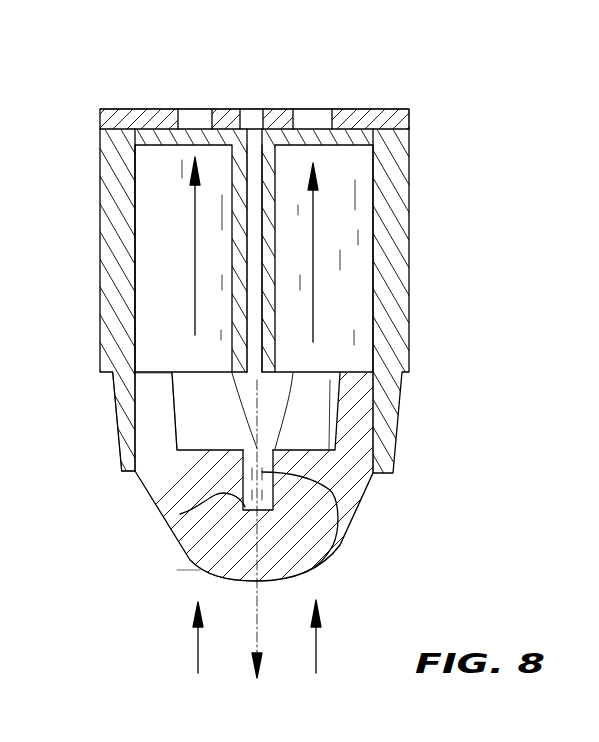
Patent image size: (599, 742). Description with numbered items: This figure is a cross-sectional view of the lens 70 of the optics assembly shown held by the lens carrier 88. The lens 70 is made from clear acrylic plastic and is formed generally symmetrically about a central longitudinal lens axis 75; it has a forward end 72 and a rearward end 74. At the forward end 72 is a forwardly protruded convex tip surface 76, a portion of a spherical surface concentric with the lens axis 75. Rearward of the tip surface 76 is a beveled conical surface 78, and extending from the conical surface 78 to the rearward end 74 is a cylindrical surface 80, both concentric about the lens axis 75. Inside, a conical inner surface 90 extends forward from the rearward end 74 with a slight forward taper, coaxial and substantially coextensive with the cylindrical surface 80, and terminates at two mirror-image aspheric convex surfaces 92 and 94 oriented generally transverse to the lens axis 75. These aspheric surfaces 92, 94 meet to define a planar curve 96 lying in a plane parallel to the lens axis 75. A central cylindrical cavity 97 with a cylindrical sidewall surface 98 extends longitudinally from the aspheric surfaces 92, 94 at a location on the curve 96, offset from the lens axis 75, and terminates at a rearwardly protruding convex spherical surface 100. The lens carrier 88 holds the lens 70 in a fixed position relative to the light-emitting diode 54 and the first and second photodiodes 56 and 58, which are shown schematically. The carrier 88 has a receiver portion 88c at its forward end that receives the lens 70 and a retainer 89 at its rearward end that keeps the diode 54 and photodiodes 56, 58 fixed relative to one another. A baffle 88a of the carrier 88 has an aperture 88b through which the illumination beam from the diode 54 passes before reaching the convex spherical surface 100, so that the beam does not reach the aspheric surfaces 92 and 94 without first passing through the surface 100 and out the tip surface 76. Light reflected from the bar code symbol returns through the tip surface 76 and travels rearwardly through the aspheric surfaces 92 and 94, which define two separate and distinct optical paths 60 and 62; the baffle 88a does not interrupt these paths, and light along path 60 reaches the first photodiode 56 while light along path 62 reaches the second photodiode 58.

The light-emitting diode 54 is at (252, 109).
The first photodiode 56 is at (195, 109).
The second photodiode 58 is at (315, 109).
The first optical path 60 is at (195, 248).
The second optical path 62 is at (387, 305).
The lens 70 is at (147, 540).
The forward end 72 is at (285, 578).
The rearward end 74 is at (303, 363).
The lens axis 75 is at (257, 605).
The tip surface 76 is at (200, 570).
The conical surface 78 is at (363, 500).
The cylindrical surface 80 is at (395, 425).
The lens carrier 88 is at (392, 198).
The baffle 88a is at (232, 192).
The aperture 88b is at (257, 138).
The receiver portion 88c is at (120, 445).
The retainer 89 is at (408, 109).
The conical inner surface 90 is at (330, 380).
The first aspheric convex surface 92 is at (170, 410).
The second aspheric convex surface 94 is at (283, 400).
The planar curve 96 is at (227, 377).
The central cylindrical cavity 97 is at (337, 550).
The cylindrical sidewall surface 98 is at (243, 470).
The convex spherical surface 100 is at (180, 514).